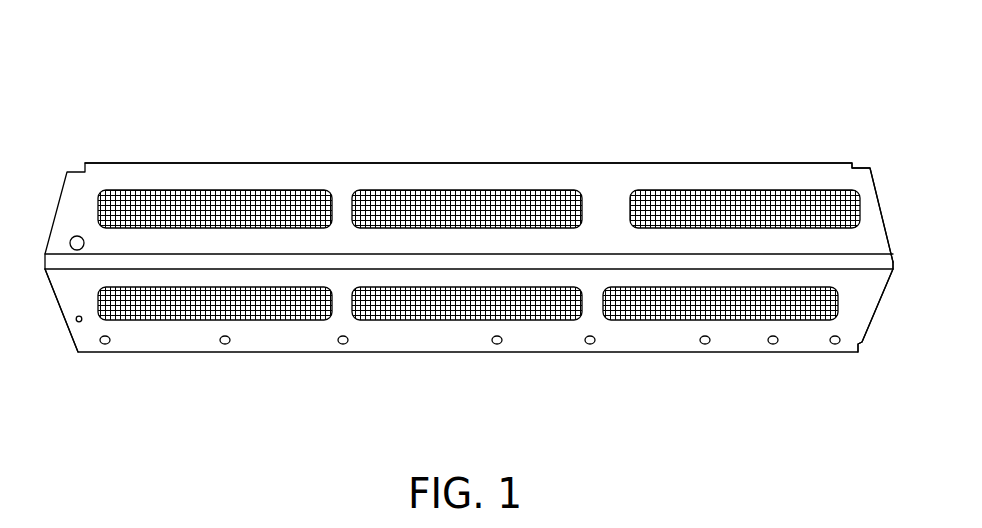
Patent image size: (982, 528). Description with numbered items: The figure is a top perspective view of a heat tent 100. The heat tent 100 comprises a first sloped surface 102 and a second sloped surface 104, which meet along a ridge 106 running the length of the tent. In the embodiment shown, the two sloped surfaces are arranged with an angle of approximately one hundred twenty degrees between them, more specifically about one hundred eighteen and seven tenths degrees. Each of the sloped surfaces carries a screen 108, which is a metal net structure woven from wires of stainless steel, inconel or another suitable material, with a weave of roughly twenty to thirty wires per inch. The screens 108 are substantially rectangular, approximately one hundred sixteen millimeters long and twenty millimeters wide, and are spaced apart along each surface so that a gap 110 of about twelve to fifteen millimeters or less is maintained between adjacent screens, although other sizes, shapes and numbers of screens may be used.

The heat tent 100 is at (99, 80).
The first sloped surface 102 is at (83, 333).
The second sloped surface 104 is at (748, 170).
The ridge 106 is at (787, 258).
The screen 108 is at (210, 227).
The gap 110 is at (595, 307).